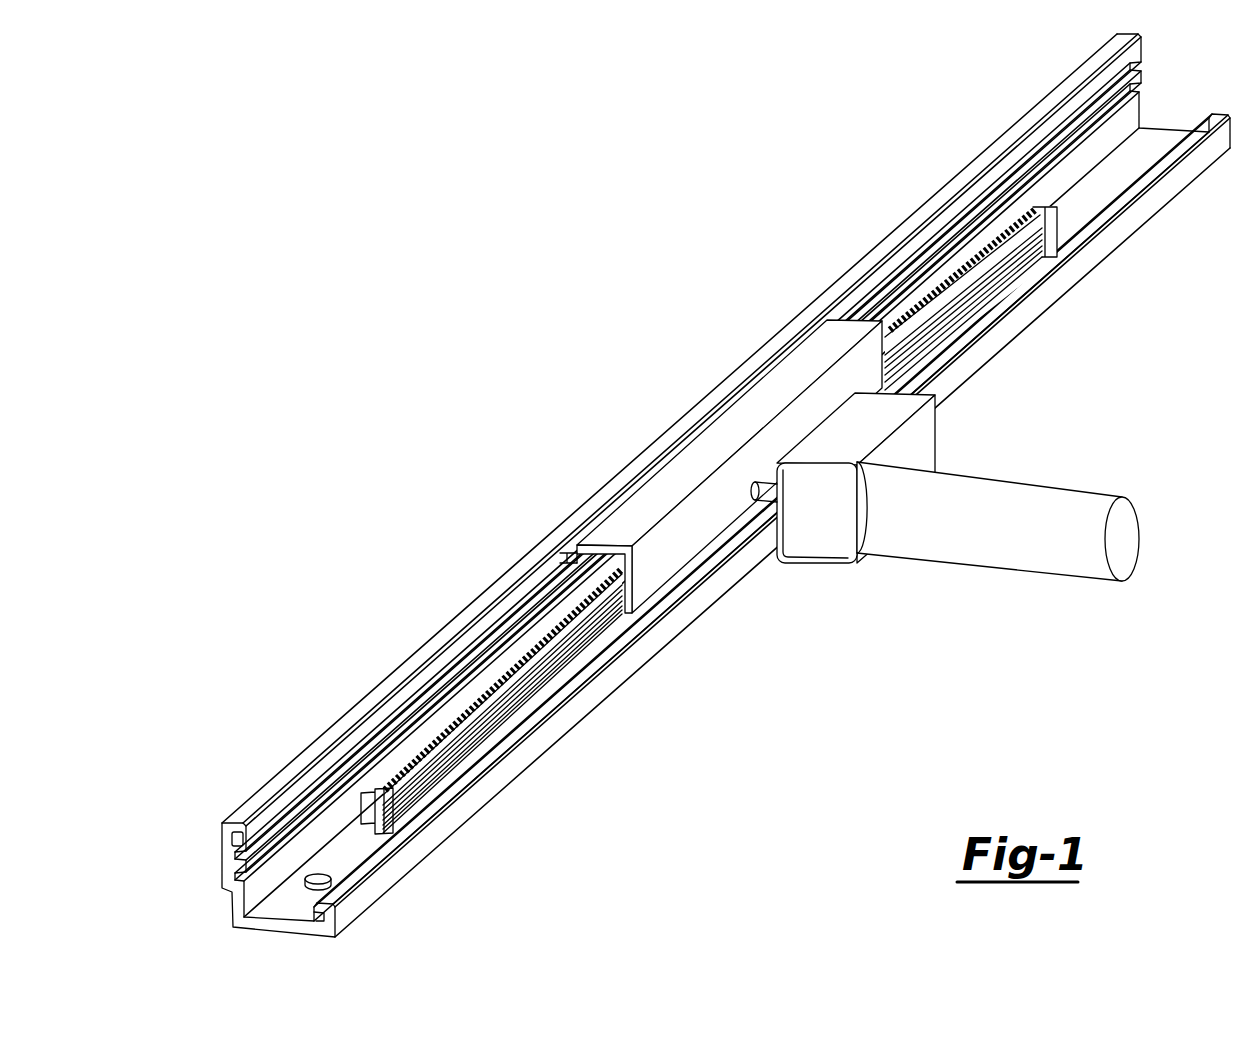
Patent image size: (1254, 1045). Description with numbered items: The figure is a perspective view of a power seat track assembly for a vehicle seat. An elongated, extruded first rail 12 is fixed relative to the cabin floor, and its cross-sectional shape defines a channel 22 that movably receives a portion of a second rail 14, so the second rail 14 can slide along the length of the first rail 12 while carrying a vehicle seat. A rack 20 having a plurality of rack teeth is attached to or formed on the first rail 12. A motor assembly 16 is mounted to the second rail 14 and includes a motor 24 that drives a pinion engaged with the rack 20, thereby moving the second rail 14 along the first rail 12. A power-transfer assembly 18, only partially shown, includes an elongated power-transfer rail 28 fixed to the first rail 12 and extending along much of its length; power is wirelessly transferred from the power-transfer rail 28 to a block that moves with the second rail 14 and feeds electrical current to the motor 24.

The first rail 12 is at (700, 485).
The second rail 14 is at (620, 518).
The motor assembly 16 is at (840, 572).
The power-transfer assembly 18 is at (582, 672).
The rack 20 is at (709, 525).
The channel 22 is at (230, 842).
The motor 24 is at (1048, 500).
The power-transfer rail 28 is at (412, 780).